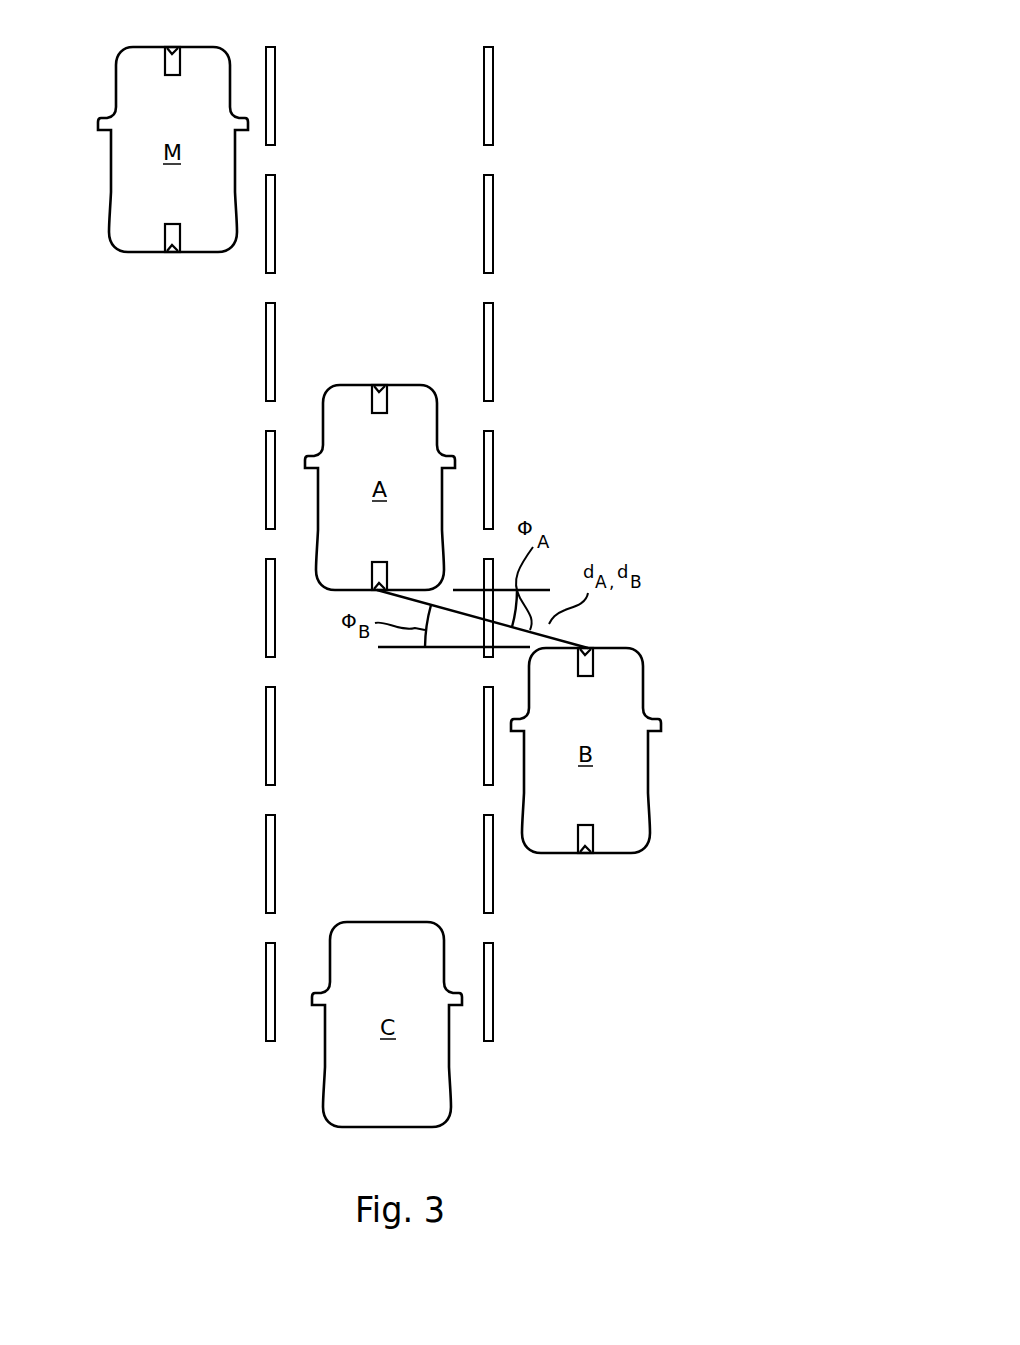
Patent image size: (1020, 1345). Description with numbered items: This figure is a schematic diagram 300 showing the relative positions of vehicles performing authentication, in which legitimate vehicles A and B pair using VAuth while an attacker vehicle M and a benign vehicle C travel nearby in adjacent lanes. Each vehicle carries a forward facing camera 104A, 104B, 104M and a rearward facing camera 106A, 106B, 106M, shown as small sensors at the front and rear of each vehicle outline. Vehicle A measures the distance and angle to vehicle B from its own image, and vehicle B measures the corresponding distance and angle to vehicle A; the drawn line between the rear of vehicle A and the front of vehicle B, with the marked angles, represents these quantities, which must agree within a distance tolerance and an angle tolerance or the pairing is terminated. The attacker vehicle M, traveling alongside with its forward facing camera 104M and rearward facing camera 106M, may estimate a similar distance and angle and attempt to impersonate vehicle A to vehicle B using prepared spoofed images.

The traffic scenario 300 is at (690, 147).
The forward facing camera 104M is at (173, 63).
The rearward facing camera 106M is at (173, 242).
The forward facing camera 104A is at (380, 402).
The rearward facing camera 106A is at (378, 578).
The forward facing camera 104B is at (588, 667).
The rearward facing camera 106B is at (585, 840).